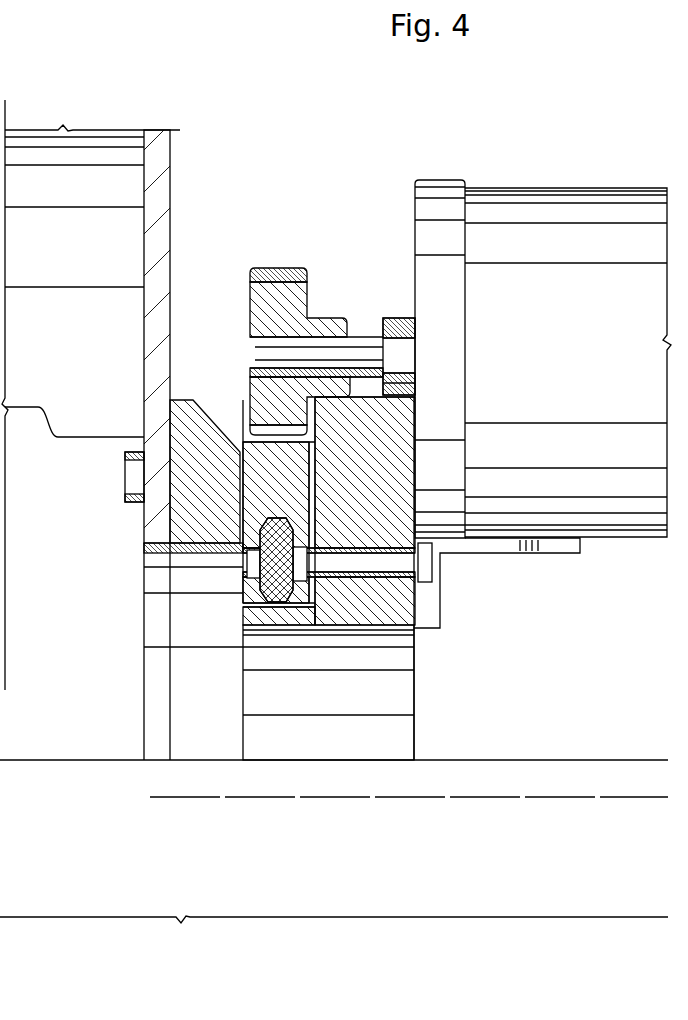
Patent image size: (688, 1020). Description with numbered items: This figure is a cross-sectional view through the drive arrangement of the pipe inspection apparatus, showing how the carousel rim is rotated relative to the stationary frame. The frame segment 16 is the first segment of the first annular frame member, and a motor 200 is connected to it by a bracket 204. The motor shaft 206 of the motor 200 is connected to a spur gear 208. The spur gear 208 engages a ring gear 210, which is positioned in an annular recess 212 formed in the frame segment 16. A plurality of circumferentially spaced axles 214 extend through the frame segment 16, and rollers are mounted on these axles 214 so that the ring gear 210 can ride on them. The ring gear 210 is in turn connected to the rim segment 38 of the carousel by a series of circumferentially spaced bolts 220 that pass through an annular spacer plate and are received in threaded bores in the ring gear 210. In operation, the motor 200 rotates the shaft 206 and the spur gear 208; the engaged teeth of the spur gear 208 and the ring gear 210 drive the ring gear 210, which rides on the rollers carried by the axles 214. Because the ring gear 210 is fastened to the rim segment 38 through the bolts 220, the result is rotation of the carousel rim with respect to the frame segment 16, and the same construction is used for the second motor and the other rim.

The rim segment 38 is at (163, 163).
The motor 200 is at (525, 218).
The spur gear 208 is at (278, 280).
The motor shaft 206 is at (375, 350).
The bolts 220 is at (137, 483).
The ring gear 210 is at (265, 490).
The axles 214 is at (375, 566).
The annular recess 212 is at (303, 605).
The bracket 204 is at (500, 543).
The frame segment 16 is at (400, 690).